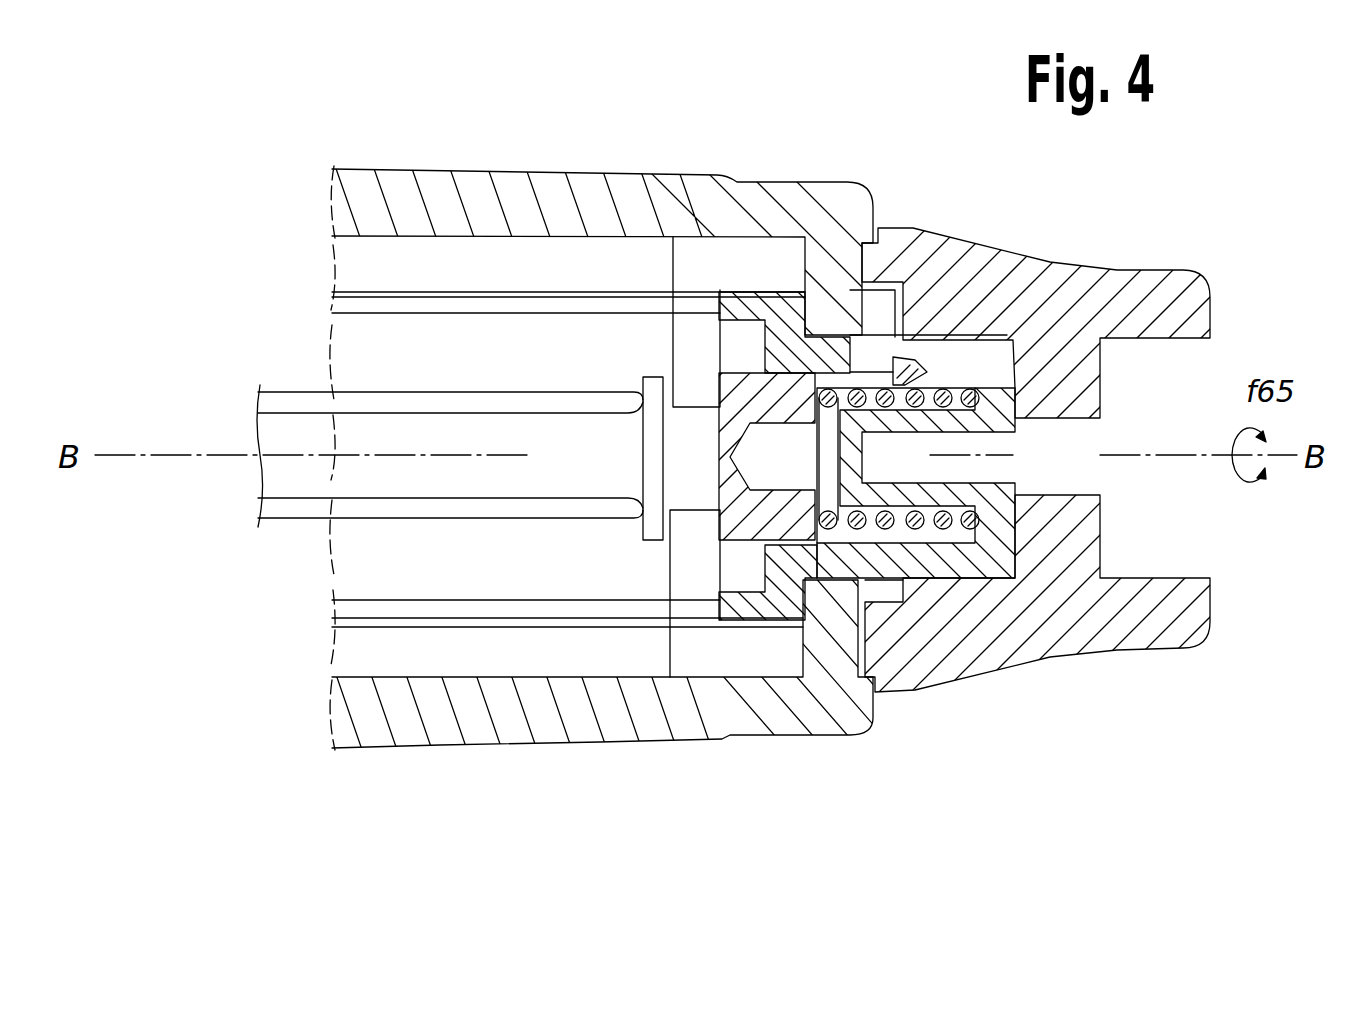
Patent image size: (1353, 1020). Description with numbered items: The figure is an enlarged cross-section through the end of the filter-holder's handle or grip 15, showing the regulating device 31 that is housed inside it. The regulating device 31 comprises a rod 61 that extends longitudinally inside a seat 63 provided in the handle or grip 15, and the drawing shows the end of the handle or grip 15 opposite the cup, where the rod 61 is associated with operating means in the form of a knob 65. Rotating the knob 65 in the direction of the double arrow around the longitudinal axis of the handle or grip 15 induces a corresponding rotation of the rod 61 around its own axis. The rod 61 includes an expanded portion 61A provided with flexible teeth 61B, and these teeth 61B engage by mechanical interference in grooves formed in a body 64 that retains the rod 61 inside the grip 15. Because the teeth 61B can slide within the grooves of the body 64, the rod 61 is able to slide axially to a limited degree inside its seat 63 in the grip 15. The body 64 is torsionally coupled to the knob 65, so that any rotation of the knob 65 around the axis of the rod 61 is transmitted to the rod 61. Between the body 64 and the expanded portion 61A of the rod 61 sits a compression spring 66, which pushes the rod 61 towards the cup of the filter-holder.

The handle or grip 15 is at (570, 722).
The regulating device 31 is at (357, 365).
The rod 61 is at (300, 492).
The expanded portion 61A is at (742, 507).
The flexible teeth 61B is at (917, 362).
The seat 63 is at (532, 303).
The body 64 is at (1002, 562).
The knob 65 is at (1110, 269).
The compression spring 66 is at (945, 528).